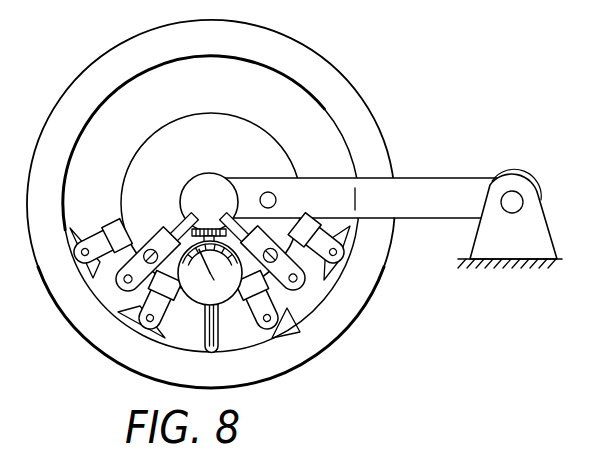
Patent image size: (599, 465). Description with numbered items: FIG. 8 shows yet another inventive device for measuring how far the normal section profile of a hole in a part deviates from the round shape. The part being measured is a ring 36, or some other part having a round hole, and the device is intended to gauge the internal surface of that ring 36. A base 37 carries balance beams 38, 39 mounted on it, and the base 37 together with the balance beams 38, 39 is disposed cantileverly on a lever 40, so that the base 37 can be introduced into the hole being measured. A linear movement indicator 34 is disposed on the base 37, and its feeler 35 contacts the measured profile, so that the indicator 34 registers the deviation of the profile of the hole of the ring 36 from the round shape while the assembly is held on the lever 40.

The linear movement indicator 34 is at (197, 296).
The feeler 35 is at (219, 341).
The ring 36 is at (331, 83).
The base 37 is at (157, 136).
The balance beam 38 is at (110, 270).
The balance beam 39 is at (68, 230).
The lever 40 is at (436, 163).